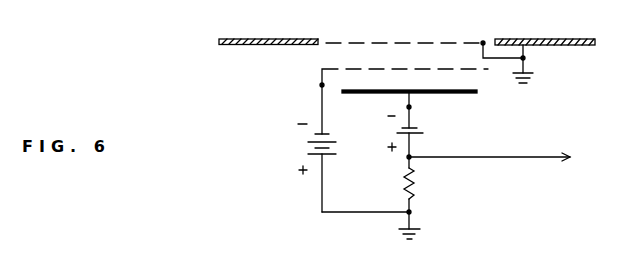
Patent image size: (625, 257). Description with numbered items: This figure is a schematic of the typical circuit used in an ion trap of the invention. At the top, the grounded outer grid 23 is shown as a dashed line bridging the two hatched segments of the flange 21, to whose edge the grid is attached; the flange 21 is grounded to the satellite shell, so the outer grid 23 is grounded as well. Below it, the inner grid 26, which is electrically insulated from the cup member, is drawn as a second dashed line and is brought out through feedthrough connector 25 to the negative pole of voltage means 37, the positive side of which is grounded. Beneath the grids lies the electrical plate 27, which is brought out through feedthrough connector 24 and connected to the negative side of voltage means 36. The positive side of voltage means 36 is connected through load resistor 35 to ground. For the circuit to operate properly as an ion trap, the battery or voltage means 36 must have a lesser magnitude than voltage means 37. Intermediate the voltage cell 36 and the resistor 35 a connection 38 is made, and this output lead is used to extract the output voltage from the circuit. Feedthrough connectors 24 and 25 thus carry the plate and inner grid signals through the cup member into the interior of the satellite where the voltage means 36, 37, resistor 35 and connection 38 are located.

The flange 21 is at (248, 36).
The outer grid 23 is at (402, 42).
The feedthrough connector 24 is at (412, 107).
The feedthrough connector 25 is at (320, 85).
The inner grid 26 is at (378, 66).
The electrical plate 27 is at (452, 93).
The load resistor 35 is at (412, 188).
The voltage means 36 is at (402, 131).
The voltage means 37 is at (310, 153).
The connection 38 is at (498, 156).